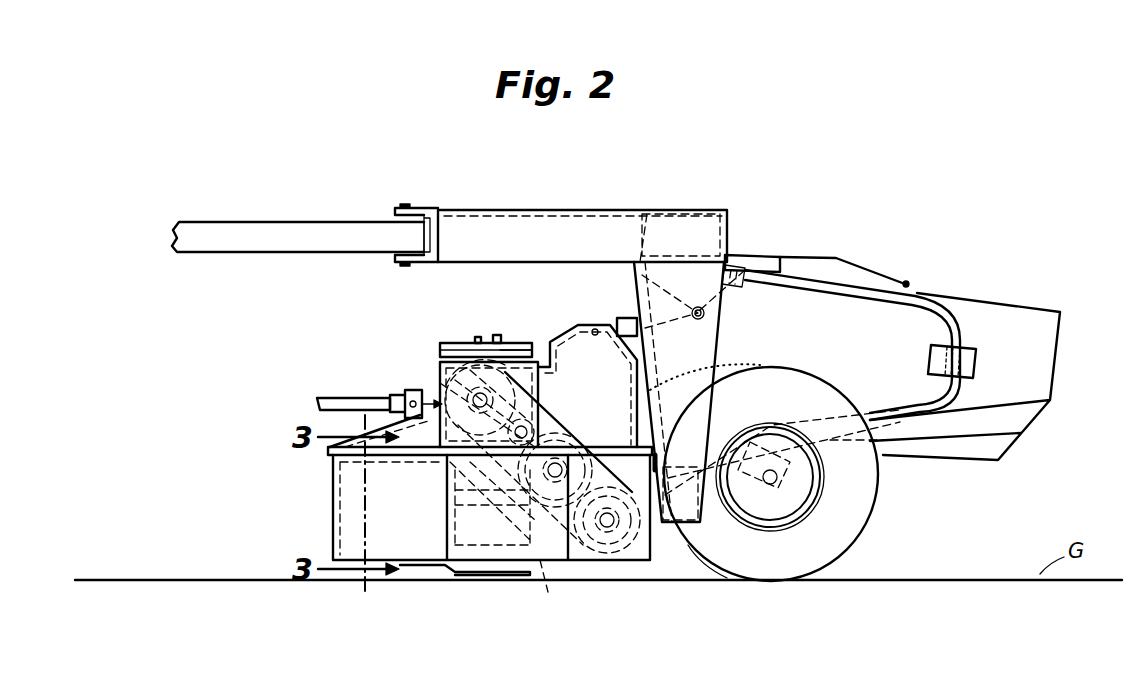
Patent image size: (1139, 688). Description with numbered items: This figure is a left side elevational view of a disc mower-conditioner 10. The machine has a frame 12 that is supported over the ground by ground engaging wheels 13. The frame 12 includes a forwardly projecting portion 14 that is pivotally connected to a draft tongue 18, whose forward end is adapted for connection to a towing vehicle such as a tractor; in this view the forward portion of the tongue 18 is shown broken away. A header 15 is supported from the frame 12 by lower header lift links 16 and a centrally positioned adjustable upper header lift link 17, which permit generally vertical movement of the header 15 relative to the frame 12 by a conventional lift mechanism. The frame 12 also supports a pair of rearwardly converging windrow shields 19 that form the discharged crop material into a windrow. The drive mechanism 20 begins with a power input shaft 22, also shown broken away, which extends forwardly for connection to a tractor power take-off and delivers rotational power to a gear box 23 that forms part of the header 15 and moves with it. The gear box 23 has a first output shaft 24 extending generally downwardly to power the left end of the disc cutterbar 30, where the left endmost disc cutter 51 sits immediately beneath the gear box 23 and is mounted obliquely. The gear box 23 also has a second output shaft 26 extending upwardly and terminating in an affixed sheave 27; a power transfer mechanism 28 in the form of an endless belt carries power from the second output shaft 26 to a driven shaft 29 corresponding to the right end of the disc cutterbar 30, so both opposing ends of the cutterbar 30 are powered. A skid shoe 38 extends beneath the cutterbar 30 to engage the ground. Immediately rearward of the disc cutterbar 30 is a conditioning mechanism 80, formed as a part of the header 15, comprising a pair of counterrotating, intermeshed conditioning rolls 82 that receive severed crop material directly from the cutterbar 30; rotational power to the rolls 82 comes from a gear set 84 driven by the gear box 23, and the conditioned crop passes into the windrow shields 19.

The disc mower-conditioner 10 is at (810, 120).
The frame 12 is at (710, 231).
The ground engaging wheels 13 is at (855, 530).
The forwardly projecting portion 14 is at (478, 210).
The header 15 is at (291, 393).
The lower header lift links 16 is at (672, 522).
The adjustable upper header lift link 17 is at (627, 318).
The draft tongue 18 is at (286, 236).
The windrow shields 19 is at (990, 306).
The drive mechanism 20 is at (384, 324).
The power input shaft 22 is at (360, 398).
The gear box 23 is at (438, 366).
The first output shaft 24 is at (470, 529).
The second output shaft 26 is at (478, 337).
The sheave 27 is at (446, 343).
The power transfer mechanism 28 is at (520, 345).
The driven shaft 29 is at (498, 335).
The disc cutterbar 30 is at (565, 572).
The skid shoe 38 is at (480, 574).
The left endmost disc cutter 51 is at (545, 592).
The conditioning mechanism 80 is at (636, 594).
The conditioning rolls 82 is at (560, 412).
The gear set 84 is at (555, 386).